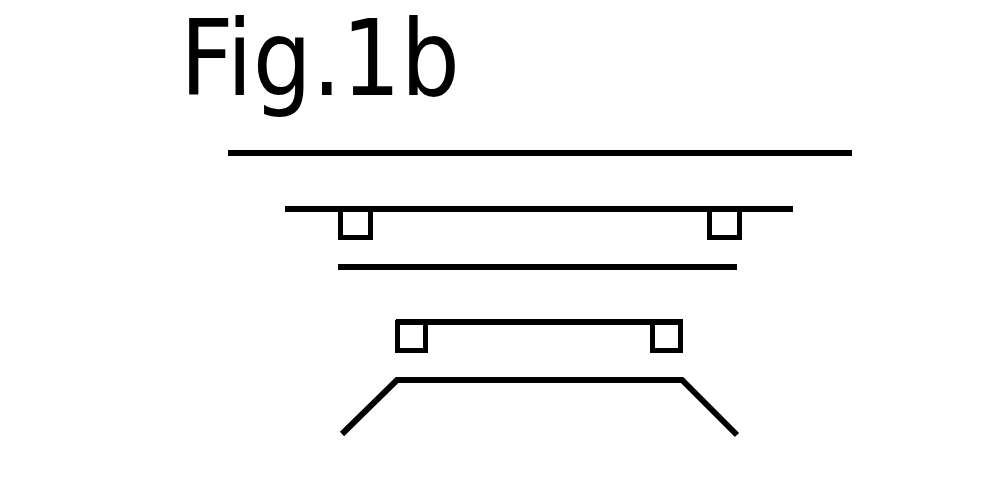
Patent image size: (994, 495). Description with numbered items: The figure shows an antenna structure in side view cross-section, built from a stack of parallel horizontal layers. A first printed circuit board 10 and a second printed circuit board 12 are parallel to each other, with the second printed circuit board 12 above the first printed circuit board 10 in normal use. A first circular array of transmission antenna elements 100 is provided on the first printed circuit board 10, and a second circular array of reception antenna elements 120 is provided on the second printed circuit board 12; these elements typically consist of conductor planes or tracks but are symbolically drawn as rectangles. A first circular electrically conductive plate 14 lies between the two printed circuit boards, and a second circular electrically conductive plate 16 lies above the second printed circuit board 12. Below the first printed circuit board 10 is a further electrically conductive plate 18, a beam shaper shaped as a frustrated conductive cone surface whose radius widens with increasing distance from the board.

The second circular electrically conductive plate 16 is at (228, 153).
The second printed circuit board 12 is at (285, 209).
The reception antenna elements 120 is at (743, 237).
The first circular electrically conductive plate 14 is at (338, 267).
The transmission antenna elements 100 is at (684, 352).
The first printed circuit board 10 is at (513, 325).
The further electrically conductive plate 18 is at (368, 411).